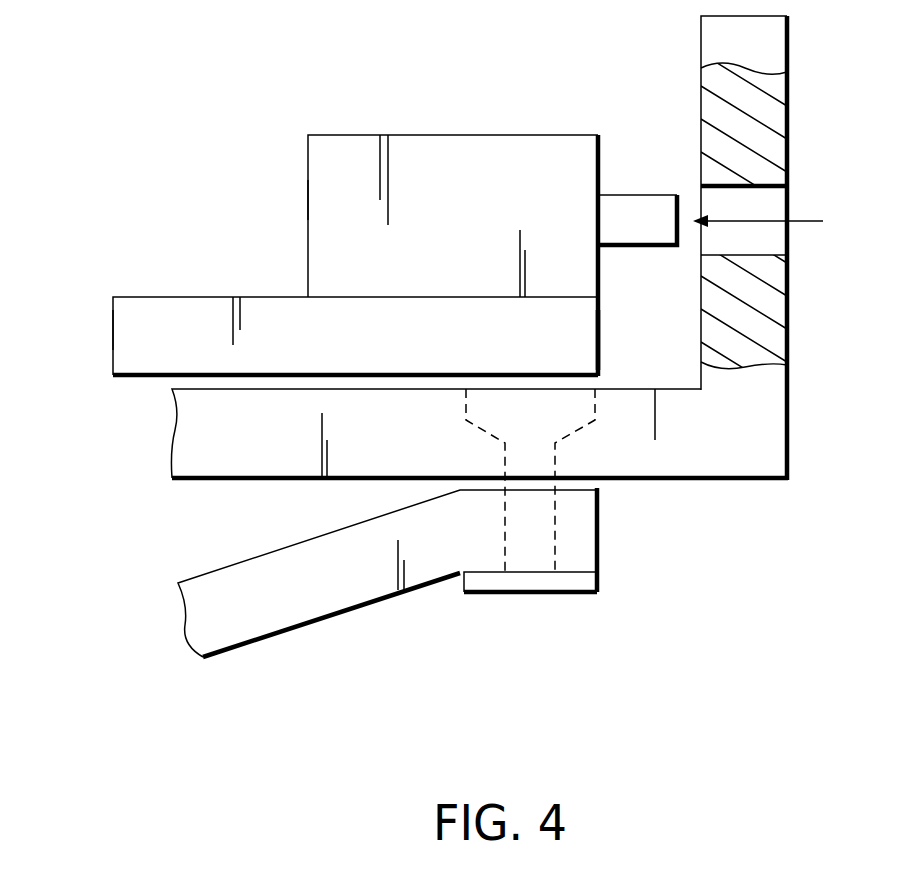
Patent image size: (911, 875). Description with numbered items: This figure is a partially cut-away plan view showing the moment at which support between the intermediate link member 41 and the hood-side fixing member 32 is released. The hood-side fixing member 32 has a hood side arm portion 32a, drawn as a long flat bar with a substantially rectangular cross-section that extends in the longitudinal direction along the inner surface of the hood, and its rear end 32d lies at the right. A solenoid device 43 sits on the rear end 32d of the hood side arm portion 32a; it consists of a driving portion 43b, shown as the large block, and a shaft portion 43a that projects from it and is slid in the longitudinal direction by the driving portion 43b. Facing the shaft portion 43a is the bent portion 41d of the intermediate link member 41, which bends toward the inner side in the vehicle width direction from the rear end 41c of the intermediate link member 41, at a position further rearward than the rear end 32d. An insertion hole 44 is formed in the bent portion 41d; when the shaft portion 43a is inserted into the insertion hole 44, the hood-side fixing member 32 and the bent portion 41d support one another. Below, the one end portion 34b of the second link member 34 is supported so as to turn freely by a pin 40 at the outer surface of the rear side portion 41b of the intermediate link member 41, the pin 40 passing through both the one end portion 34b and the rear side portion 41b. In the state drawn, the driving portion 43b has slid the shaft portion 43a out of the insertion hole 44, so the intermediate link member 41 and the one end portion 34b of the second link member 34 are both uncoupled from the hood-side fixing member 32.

The hood-side fixing member 32 is at (163, 297).
The hood side arm portion 32a is at (113, 330).
The rear end of the hood side arm portion 32d is at (590, 333).
The second link member 34 is at (302, 636).
The one end portion of the second link member 34b is at (583, 535).
The pin 40 is at (532, 580).
The intermediate link member 41 is at (222, 462).
The rear side portion of the intermediate link member 41b is at (490, 457).
The rear end of the intermediate link member 41c is at (765, 416).
The bent portion 41d is at (775, 47).
The solenoid device 43 is at (477, 130).
The shaft portion 43a is at (642, 205).
The driving portion 43b is at (320, 197).
The insertion hole 44 is at (772, 244).